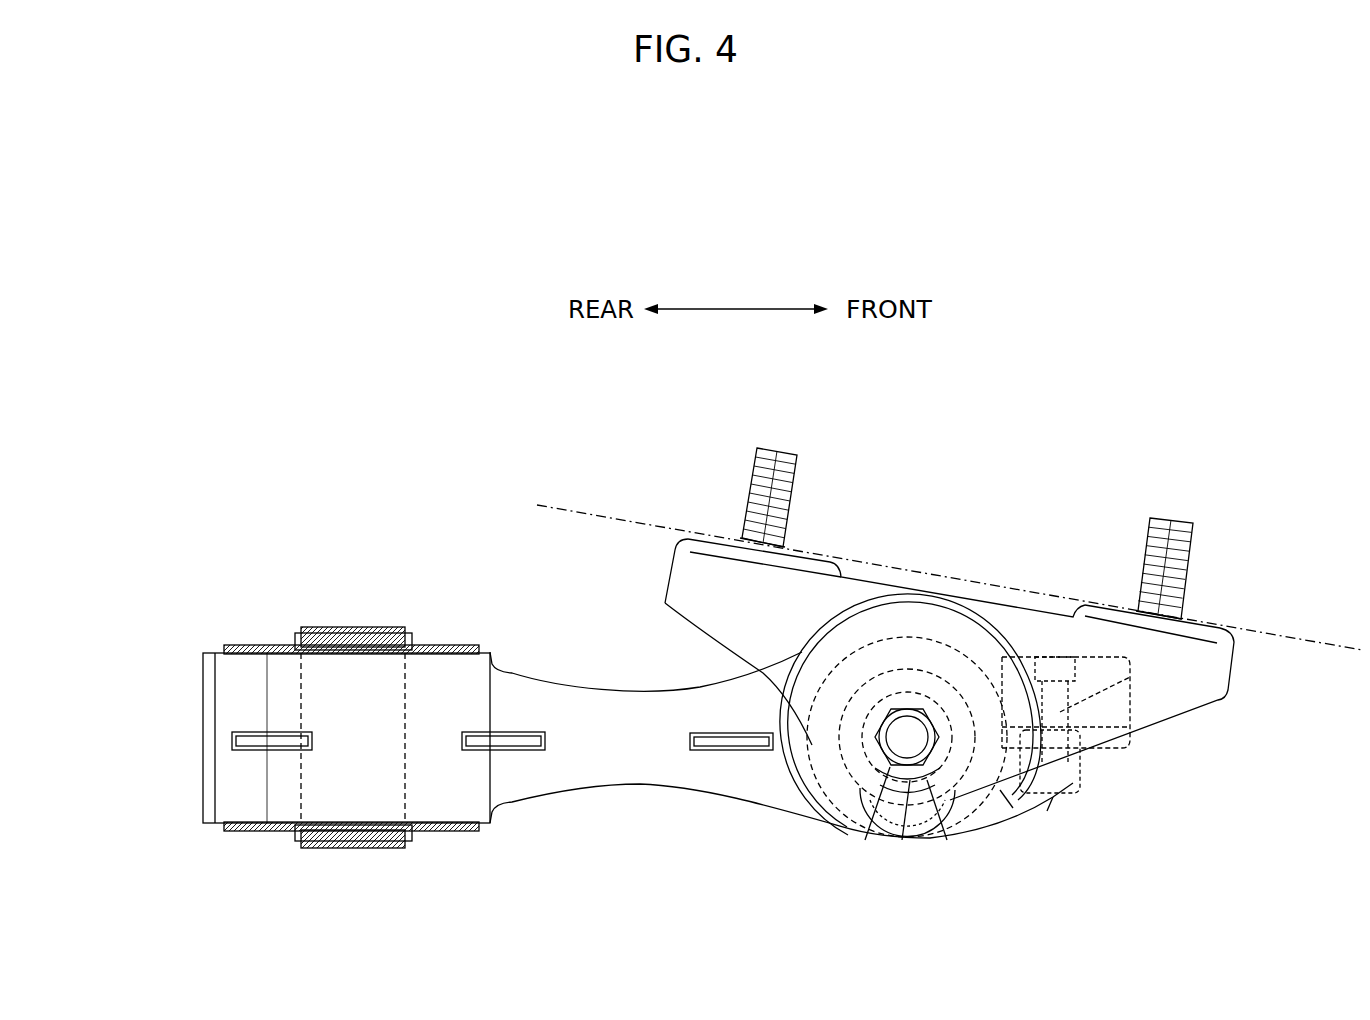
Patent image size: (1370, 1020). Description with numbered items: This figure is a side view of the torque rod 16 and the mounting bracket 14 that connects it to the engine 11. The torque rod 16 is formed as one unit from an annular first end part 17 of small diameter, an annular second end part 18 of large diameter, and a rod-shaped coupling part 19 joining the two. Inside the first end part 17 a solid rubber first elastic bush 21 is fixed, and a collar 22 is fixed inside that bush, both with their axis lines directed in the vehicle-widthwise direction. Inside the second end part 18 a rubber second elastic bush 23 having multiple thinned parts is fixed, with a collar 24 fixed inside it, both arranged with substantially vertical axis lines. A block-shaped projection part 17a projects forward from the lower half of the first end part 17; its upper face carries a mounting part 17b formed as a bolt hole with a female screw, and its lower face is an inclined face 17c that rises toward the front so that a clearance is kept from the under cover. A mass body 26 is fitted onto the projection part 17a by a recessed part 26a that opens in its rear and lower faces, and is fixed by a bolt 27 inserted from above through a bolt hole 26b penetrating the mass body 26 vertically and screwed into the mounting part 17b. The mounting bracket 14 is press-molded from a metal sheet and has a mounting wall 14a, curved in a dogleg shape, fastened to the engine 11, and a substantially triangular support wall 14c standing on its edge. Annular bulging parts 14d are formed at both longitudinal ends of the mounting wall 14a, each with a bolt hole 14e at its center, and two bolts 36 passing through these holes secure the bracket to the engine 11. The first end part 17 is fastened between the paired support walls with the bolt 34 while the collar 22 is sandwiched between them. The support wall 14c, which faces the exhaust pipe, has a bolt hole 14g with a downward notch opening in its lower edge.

The engine 11 is at (605, 533).
The mounting bracket 14 is at (910, 568).
The mounting wall 14a is at (1010, 603).
The support wall 14c is at (730, 628).
The bulging part 14d is at (808, 553).
The bolt hole 14e is at (742, 528).
The bolt hole 14g is at (897, 778).
The torque rod 16 is at (694, 830).
The first end part 17 is at (921, 853).
The projection part 17a is at (1013, 808).
The mounting part 17b is at (1100, 782).
The inclined face 17c is at (1047, 811).
The second end part 18 is at (208, 772).
The coupling part 19 is at (650, 773).
The first elastic bush 21 is at (927, 782).
The collar 22 is at (912, 782).
The second elastic bush 23 is at (445, 832).
The collar 24 is at (363, 625).
The mass body 26 is at (1145, 754).
The recessed part 26a is at (1130, 728).
The bolt hole 26b is at (1130, 677).
The bolt 27 is at (1060, 652).
The bolt 34 is at (905, 737).
The bolt 36 is at (797, 467).